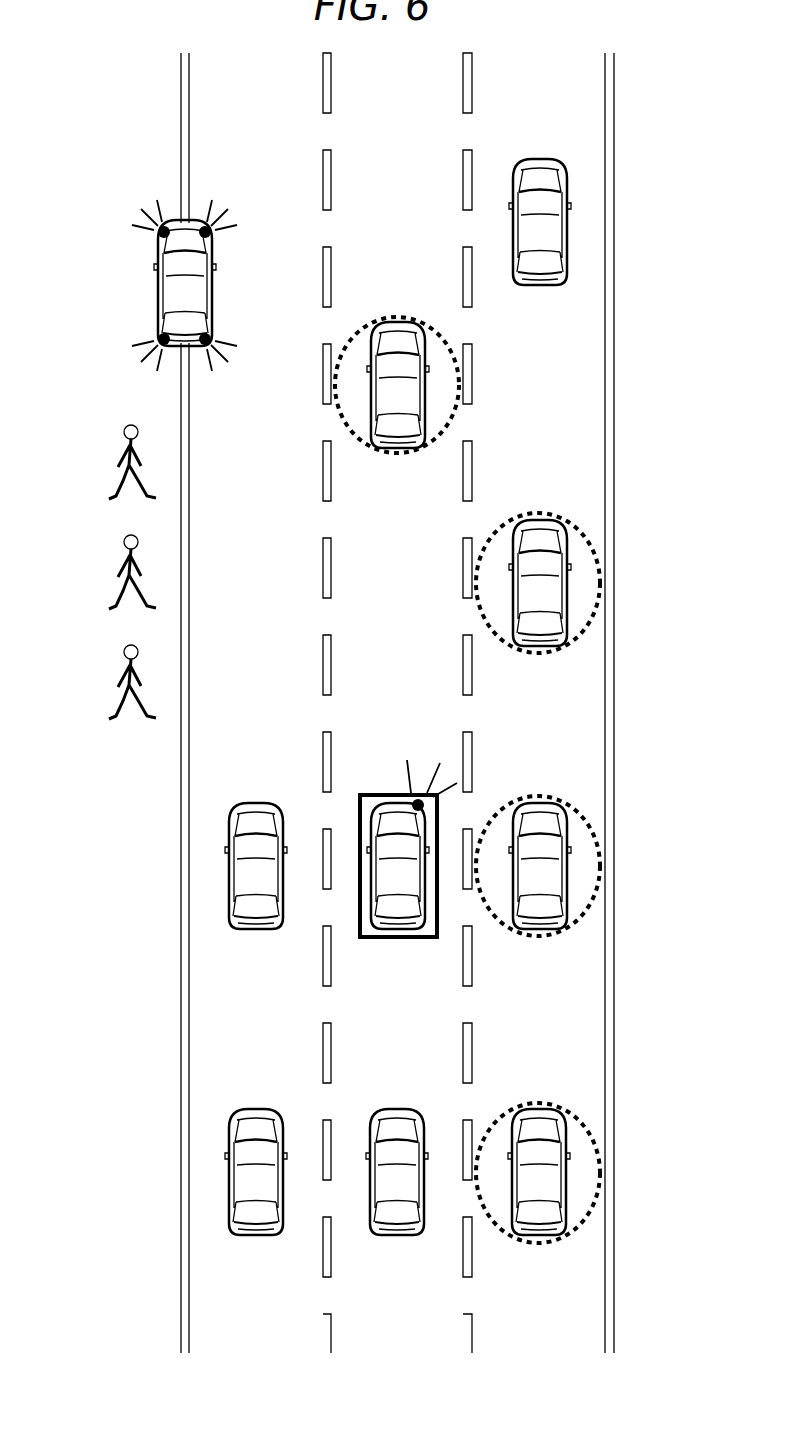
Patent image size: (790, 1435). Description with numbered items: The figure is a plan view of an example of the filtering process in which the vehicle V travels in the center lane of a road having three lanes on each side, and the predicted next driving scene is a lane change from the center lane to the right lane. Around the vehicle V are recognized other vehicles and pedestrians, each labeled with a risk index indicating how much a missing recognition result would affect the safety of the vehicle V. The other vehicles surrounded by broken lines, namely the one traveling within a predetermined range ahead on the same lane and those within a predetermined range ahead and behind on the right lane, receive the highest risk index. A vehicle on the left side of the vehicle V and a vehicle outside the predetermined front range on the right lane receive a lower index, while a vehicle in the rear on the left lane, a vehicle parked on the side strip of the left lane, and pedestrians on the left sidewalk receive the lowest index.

The vehicle V is at (398, 937).